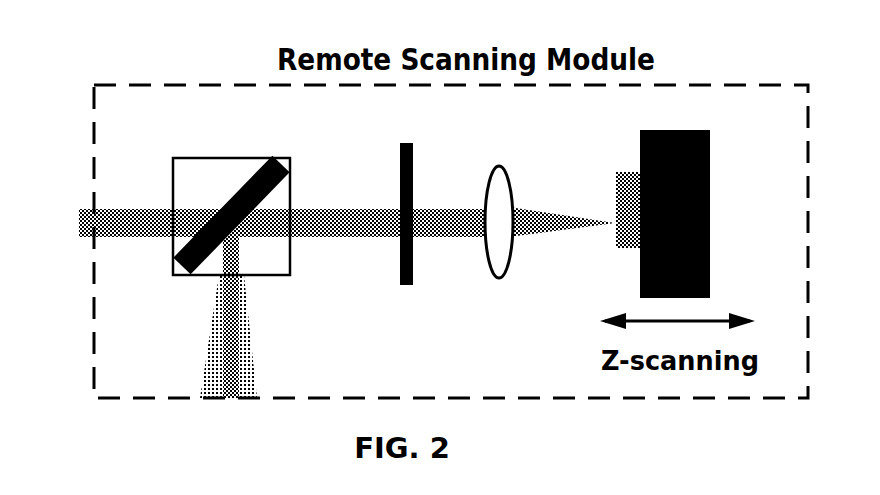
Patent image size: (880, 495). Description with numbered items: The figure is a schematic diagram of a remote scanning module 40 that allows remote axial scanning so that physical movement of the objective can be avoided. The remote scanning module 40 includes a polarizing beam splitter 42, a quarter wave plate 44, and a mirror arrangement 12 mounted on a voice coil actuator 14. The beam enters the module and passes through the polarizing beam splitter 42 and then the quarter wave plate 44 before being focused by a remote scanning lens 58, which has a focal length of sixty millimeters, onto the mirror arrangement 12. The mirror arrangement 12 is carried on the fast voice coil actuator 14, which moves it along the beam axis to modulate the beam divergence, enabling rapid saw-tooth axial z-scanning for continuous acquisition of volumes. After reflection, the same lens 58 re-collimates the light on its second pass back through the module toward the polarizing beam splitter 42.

The remote scanning module 40 is at (62, 149).
The polarizing beam splitter 42 is at (175, 263).
The quarter wave plate 44 is at (406, 286).
The remote scanning lens 58 is at (497, 278).
The mirror arrangement 12 is at (617, 239).
The voice coil actuator 14 is at (710, 238).